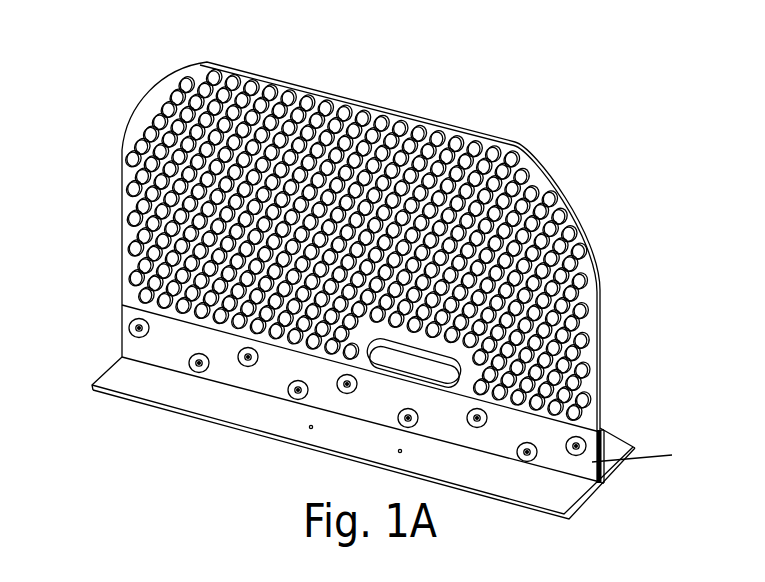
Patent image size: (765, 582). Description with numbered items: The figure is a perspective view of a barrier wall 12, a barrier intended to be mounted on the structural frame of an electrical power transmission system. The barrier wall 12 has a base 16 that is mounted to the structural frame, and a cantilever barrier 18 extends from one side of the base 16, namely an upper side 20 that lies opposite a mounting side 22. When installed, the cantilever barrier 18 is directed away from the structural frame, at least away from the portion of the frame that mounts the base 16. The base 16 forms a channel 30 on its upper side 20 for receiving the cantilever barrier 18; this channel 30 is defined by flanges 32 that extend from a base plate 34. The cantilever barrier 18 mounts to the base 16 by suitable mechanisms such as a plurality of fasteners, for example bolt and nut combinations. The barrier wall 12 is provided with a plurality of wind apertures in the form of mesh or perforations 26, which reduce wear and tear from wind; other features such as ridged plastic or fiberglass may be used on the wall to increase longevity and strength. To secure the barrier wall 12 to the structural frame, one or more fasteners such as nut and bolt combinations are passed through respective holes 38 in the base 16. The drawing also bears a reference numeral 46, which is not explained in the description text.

The barrier wall 12 is at (507, 77).
The base 16 is at (672, 455).
The cantilever barrier 18 is at (570, 203).
The upper side 20 is at (115, 336).
The mounting side 22 is at (125, 407).
The perforations 26 is at (277, 110).
The channel 30 is at (610, 449).
The flanges 32 is at (604, 431).
The base plate 34 is at (492, 488).
The holes 38 is at (309, 427).
The fastener 46 is at (331, 572).